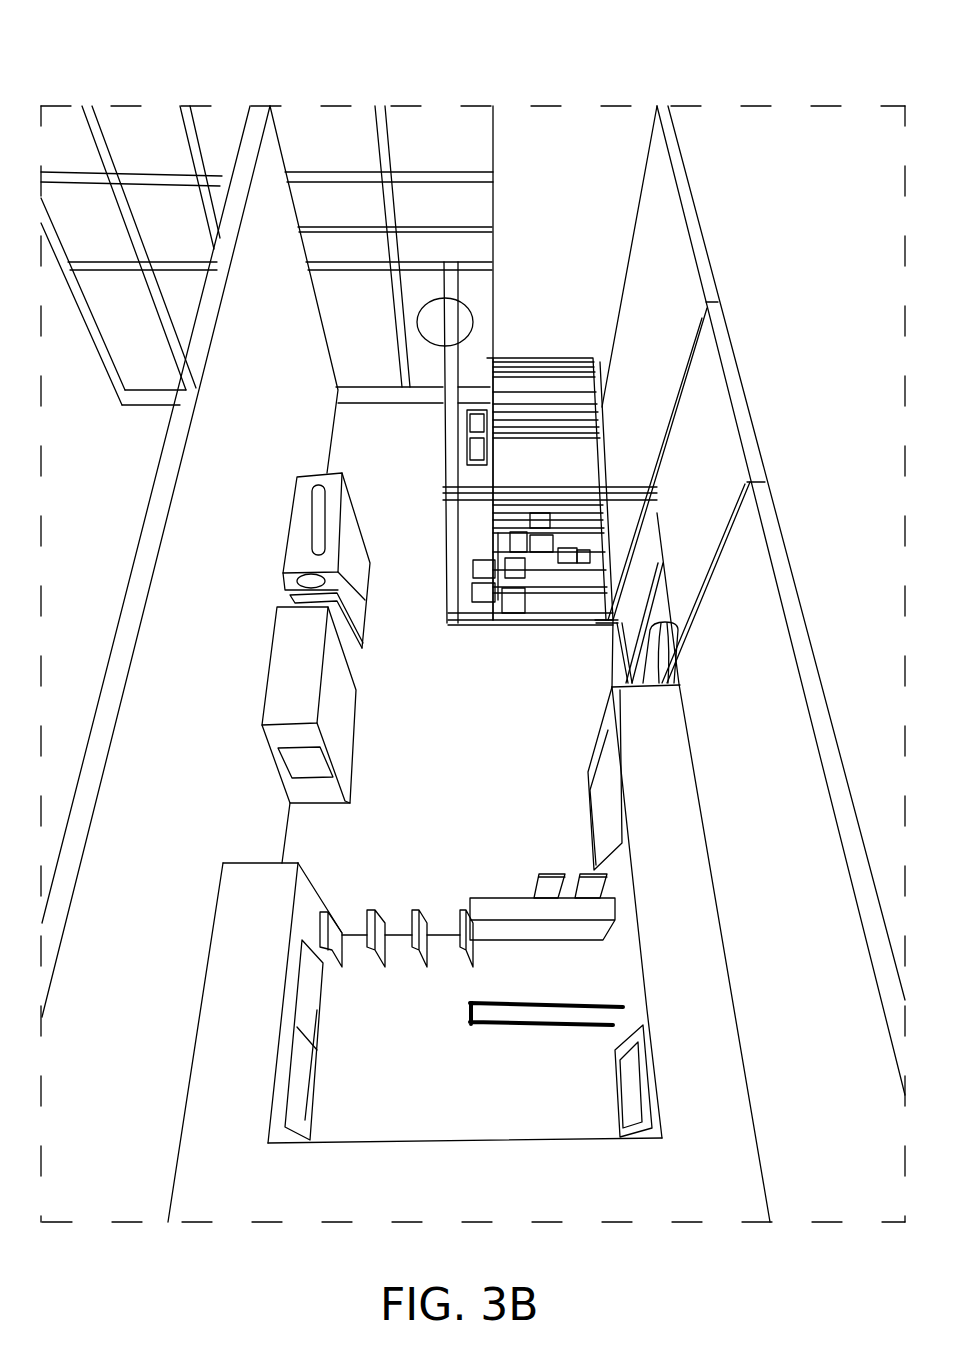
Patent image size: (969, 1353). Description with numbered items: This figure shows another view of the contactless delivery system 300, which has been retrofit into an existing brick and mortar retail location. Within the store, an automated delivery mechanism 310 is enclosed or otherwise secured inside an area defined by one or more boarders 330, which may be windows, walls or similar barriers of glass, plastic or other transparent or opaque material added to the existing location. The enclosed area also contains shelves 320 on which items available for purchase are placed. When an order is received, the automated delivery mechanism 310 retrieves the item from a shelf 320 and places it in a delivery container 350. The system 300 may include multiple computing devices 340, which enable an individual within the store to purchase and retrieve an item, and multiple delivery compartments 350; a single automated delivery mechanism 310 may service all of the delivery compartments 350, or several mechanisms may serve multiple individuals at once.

The contactless delivery system 300 is at (264, 80).
The automated delivery mechanism 310 is at (503, 542).
The shelves 320 is at (490, 383).
The boarders 330 is at (442, 467).
The computing device 340 is at (485, 570).
The delivery container 350 is at (485, 593).